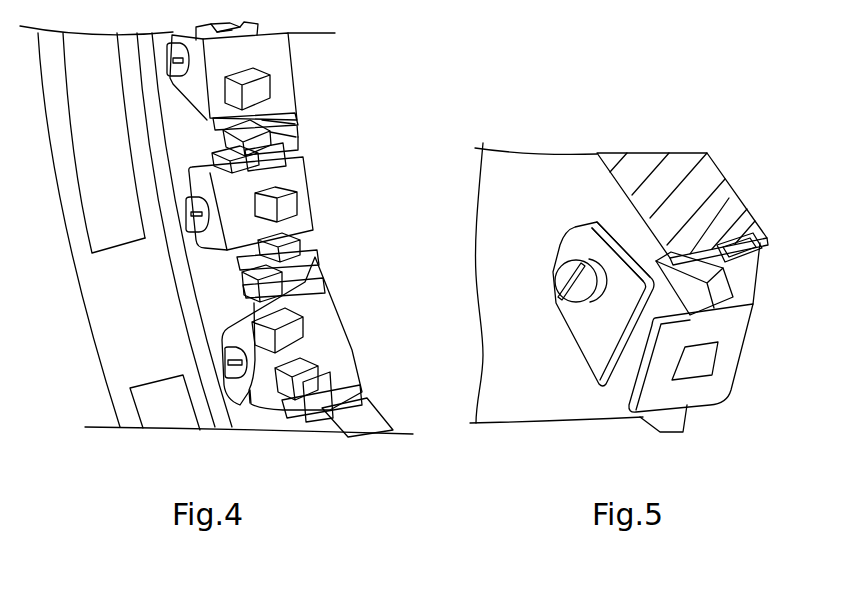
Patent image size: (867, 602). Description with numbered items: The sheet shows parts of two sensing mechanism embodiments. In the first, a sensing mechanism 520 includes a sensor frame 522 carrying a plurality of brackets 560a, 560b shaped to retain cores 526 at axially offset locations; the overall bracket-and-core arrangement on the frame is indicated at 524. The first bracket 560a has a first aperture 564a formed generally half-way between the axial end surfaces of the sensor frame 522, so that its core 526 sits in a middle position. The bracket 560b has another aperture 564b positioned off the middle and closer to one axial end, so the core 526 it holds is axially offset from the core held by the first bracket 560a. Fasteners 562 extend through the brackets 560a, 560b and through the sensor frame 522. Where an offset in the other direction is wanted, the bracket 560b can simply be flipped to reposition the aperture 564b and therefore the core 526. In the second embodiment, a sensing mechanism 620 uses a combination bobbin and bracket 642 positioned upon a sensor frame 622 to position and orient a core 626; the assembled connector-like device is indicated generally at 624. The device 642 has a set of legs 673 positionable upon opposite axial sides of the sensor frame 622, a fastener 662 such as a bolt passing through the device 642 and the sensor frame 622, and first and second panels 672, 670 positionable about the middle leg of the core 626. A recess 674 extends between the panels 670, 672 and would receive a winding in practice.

In FIG. 4, the sensing mechanism 520 is at (128, 198).
In FIG. 4, the sensor frame 522 is at (202, 276).
In FIG. 4, the connector module assembly 524 is at (313, 156).
In FIG. 4, the core 526 is at (293, 222).
In FIG. 4, the first bracket 560a is at (308, 243).
In FIG. 4, the bracket 560b is at (335, 348).
In FIG. 4, the fastener 562 is at (228, 385).
In FIG. 4, the first aperture 564a is at (280, 190).
In FIG. 4, the aperture 564b is at (250, 382).
In FIG. 5, the sensing mechanism 620 is at (725, 423).
In FIG. 5, the sensor frame 622 is at (722, 181).
In FIG. 5, the connector 624 is at (766, 307).
In FIG. 5, the core 626 is at (719, 186).
In FIG. 5, the combination bobbin and bracket 642 is at (730, 357).
In FIG. 5, the fastener 662 is at (562, 274).
In FIG. 5, the second panel 670 is at (698, 408).
In FIG. 5, the first panel 672 is at (608, 354).
In FIG. 5, the legs 673 is at (583, 235).
In FIG. 5, the recess 674 is at (628, 366).